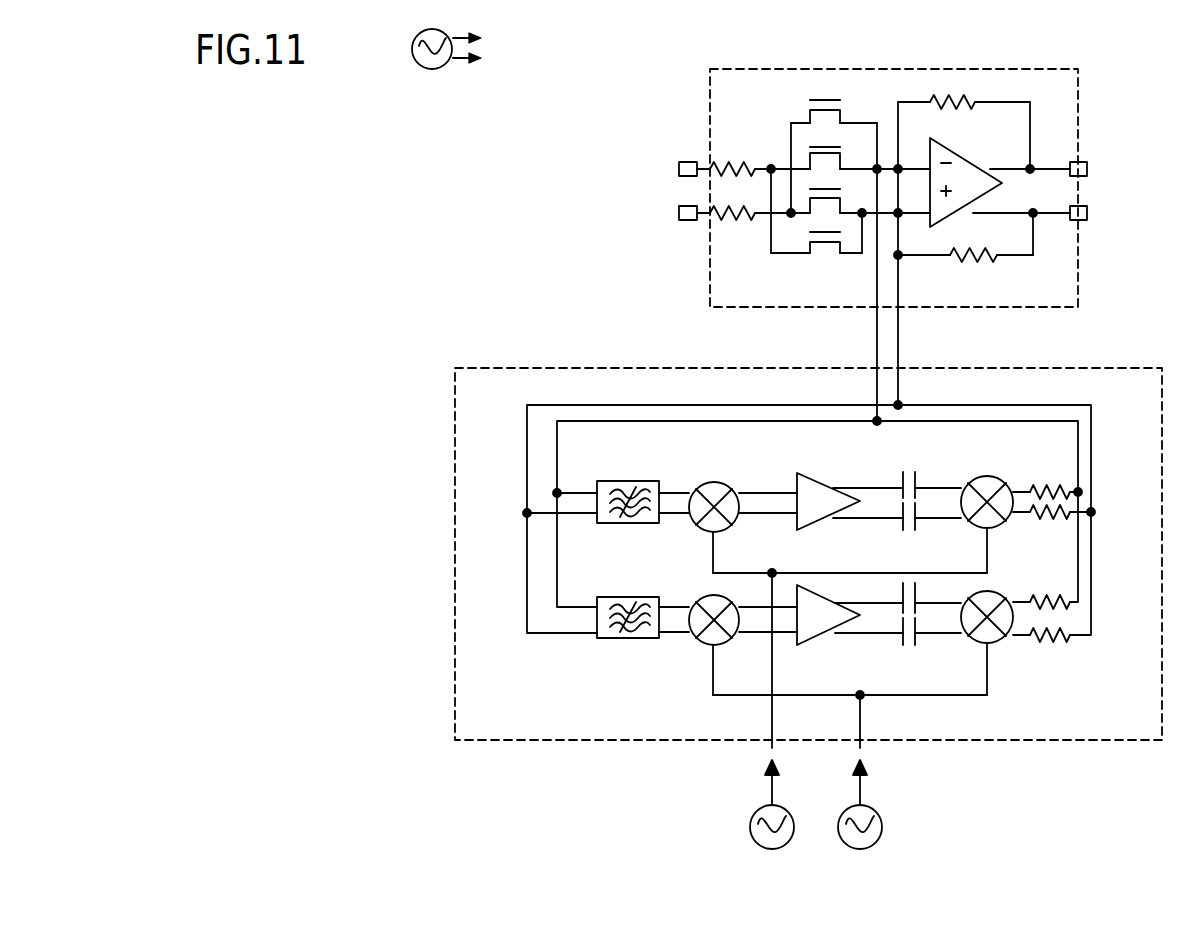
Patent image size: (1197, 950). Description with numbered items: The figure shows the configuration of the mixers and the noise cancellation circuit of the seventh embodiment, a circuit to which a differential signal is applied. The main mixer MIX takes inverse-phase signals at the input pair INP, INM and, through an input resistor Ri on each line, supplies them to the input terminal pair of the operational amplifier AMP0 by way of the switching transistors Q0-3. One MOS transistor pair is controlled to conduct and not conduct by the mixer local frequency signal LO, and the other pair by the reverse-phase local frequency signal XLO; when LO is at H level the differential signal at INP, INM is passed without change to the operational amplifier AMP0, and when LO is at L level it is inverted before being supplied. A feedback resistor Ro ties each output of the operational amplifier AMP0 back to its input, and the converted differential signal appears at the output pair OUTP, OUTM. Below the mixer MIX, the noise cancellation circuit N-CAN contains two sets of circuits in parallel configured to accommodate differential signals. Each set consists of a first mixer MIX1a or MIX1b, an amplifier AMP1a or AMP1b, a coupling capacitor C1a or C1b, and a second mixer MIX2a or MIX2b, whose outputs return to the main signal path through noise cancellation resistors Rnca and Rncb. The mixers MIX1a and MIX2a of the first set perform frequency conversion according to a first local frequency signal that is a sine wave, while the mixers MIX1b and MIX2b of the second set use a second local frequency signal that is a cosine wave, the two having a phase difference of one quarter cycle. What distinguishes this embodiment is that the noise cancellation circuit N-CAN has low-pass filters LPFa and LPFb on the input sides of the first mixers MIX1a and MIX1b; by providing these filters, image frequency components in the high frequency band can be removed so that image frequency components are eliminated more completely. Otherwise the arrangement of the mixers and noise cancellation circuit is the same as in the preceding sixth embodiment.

The mixer local frequency signal LO is at (475, 48).
The reverse-phase local frequency signal XLO is at (498, 59).
The mixer MIX is at (894, 169).
The positive input terminal INP is at (663, 162).
The negative input terminal INM is at (662, 207).
The input resistor Ri is at (732, 193).
The mixer transistors Q0-3 is at (824, 188).
The operational amplifier AMP0 is at (976, 188).
The feedback resistor Ro is at (965, 192).
The positive output terminal OUTP is at (1076, 161).
The negative output terminal OUTM is at (1069, 207).
The noise cancellation circuit N-CAN is at (808, 536).
The low-pass filter LPFa is at (625, 482).
The low-pass filter LPFb is at (625, 599).
The first mixer MIX1a is at (700, 507).
The first mixer MIX1b is at (686, 645).
The amplifier AMP1a is at (846, 484).
The amplifier AMP1b is at (843, 636).
The capacitor C1a is at (909, 515).
The capacitor C1b is at (929, 629).
The second mixer MIX2a is at (980, 506).
The second mixer MIX2b is at (1008, 632).
The noise cancellation resistor Rnca is at (1052, 517).
The noise cancellation resistor Rncb is at (1041, 638).